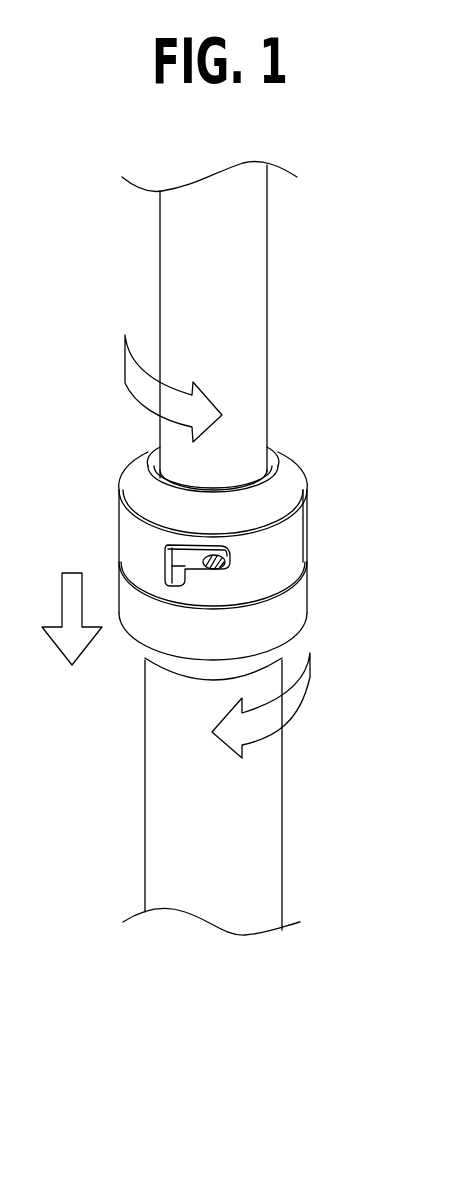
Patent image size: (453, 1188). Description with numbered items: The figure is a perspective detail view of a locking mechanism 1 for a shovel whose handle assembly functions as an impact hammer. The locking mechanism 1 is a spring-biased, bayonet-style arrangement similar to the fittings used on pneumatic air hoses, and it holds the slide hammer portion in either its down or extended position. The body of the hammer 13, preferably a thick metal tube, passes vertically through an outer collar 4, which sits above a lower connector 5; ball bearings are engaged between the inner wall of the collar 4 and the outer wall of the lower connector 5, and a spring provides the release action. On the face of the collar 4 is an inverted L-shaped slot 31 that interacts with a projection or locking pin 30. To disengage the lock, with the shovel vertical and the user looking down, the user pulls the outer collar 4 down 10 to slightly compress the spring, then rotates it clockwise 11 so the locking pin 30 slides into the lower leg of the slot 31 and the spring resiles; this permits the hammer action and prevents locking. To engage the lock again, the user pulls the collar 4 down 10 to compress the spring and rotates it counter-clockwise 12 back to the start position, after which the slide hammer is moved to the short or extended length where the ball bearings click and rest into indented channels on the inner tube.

The locking mechanism 1 is at (205, 572).
The collar 4 is at (307, 490).
The lower connector 5 is at (284, 653).
The down 10 is at (67, 613).
The clockwise 11 is at (272, 705).
The counter-clockwise 12 is at (158, 388).
The hammer 13 is at (224, 296).
The locking pin 30 is at (225, 561).
The slot 31 is at (186, 568).